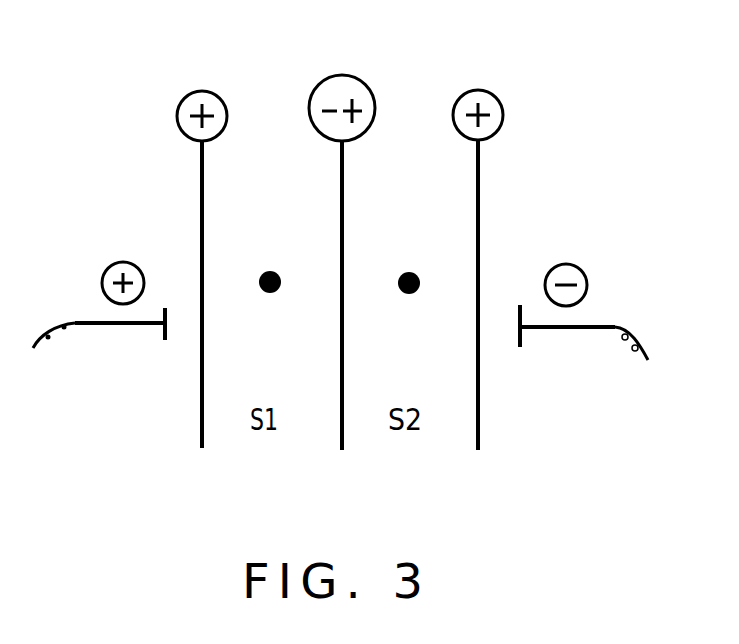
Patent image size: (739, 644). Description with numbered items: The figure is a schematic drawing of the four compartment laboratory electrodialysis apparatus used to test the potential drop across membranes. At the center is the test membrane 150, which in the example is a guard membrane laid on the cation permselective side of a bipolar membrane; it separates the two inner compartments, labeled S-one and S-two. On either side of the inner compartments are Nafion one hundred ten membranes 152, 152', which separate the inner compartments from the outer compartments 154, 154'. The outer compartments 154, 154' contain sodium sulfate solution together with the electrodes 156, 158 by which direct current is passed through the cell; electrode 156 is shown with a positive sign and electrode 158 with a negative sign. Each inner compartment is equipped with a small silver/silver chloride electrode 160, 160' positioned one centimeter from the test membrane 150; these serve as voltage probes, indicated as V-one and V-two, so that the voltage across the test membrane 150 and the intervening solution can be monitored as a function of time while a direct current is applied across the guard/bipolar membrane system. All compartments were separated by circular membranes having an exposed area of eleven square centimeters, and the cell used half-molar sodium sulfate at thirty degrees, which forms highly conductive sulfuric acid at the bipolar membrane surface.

The test membrane 150 is at (378, 73).
The Nafion 110 membrane 152 is at (188, 92).
The Nafion 110 membrane 152' is at (498, 90).
The outer compartment 154 is at (109, 287).
The outer compartment 154' is at (575, 293).
The electrode 156 is at (101, 275).
The electrode 158 is at (586, 280).
The Ag/AgCl electrode 160 is at (193, 318).
The Ag/AgCl electrode 160' is at (483, 318).